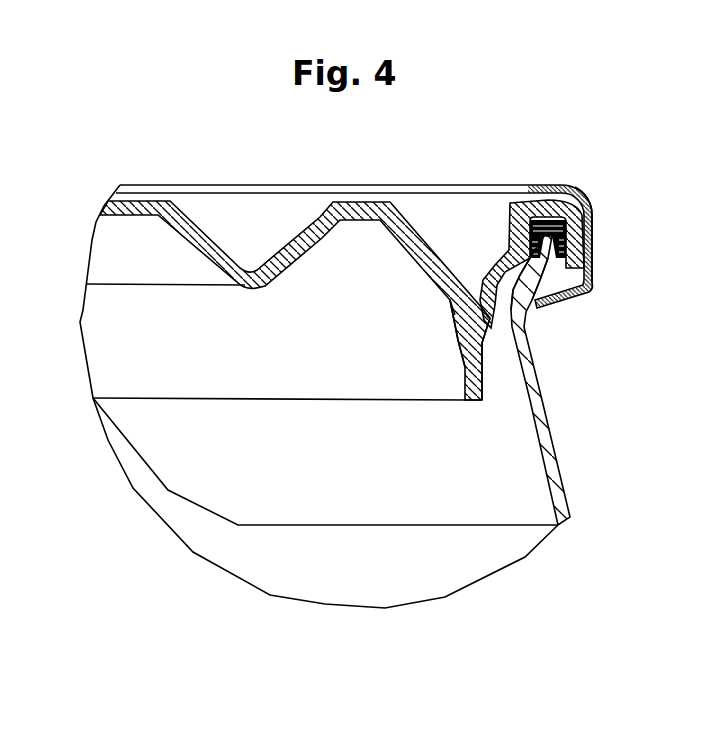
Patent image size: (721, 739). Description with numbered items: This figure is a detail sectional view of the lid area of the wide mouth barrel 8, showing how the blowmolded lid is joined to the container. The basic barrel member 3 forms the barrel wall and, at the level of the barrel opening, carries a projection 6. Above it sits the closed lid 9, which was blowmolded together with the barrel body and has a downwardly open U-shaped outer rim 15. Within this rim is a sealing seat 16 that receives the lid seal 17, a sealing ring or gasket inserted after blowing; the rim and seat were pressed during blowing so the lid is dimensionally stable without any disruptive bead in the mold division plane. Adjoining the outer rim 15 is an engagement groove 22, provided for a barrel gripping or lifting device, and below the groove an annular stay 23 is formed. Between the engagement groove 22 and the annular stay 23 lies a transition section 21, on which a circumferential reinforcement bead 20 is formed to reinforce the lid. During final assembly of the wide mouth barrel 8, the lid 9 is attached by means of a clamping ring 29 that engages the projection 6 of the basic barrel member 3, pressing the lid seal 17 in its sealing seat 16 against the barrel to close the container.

The basic barrel member 3 is at (538, 387).
The projection 6 is at (556, 277).
The wide mouth barrel 8 is at (573, 471).
The lid 9 is at (363, 212).
The outer rim 15 is at (545, 205).
The sealing seat 16 is at (570, 200).
The lid seal 17 is at (590, 218).
The reinforcement bead 20 is at (460, 347).
The transition section 21 is at (452, 327).
The engagement groove 22 is at (463, 265).
The annular stay 23 is at (463, 390).
The clamping ring 29 is at (590, 247).